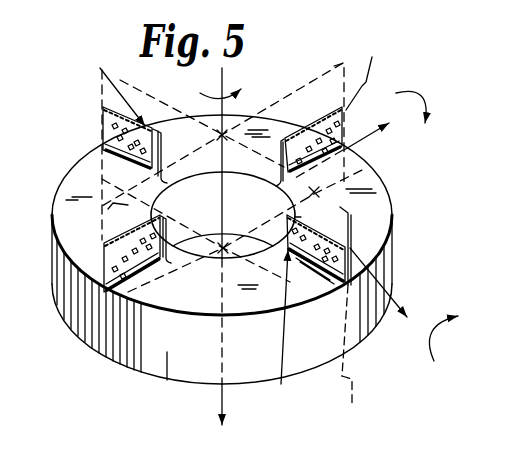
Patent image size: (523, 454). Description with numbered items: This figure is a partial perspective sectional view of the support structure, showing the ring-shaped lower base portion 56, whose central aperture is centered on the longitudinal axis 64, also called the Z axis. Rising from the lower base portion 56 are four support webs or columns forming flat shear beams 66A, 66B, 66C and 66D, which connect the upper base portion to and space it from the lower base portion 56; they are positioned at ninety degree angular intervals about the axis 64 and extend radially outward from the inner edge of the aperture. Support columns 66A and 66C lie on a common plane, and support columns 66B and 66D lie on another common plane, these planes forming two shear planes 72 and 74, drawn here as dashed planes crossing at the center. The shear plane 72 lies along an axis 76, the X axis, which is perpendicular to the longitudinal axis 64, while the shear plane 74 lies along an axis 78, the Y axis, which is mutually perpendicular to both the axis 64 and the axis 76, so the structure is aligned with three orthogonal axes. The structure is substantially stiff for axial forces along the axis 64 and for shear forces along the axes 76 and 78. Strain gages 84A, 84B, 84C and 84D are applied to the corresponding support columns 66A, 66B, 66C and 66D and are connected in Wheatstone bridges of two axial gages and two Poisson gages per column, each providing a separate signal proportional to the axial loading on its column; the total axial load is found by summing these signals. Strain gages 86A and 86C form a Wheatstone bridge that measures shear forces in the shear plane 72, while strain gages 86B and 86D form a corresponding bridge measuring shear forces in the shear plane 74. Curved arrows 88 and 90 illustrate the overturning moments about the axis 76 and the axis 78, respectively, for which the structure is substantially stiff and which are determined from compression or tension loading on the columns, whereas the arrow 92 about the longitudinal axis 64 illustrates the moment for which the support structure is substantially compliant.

The lower base portion 56 is at (373, 325).
The longitudinal axis 64 is at (224, 105).
The shear plane 72 is at (305, 82).
The shear plane 74 is at (351, 358).
The X axis 76 is at (380, 131).
The Y axis 78 is at (404, 309).
The strain gage 84A is at (63, 313).
The strain gage 84B is at (352, 236).
The strain gage 84C is at (345, 165).
The strain gage 84D is at (103, 150).
The support column 66A is at (103, 268).
The support column 66B is at (352, 252).
The support column 66C is at (344, 118).
The support column 66D is at (104, 110).
The strain gage 86A is at (108, 209).
The strain gage 86B is at (281, 384).
The strain gage 86C is at (374, 72).
The strain gage 86D is at (103, 84).
The arrow 88 is at (427, 101).
The arrow 90 is at (453, 342).
The arrow 92 is at (205, 90).